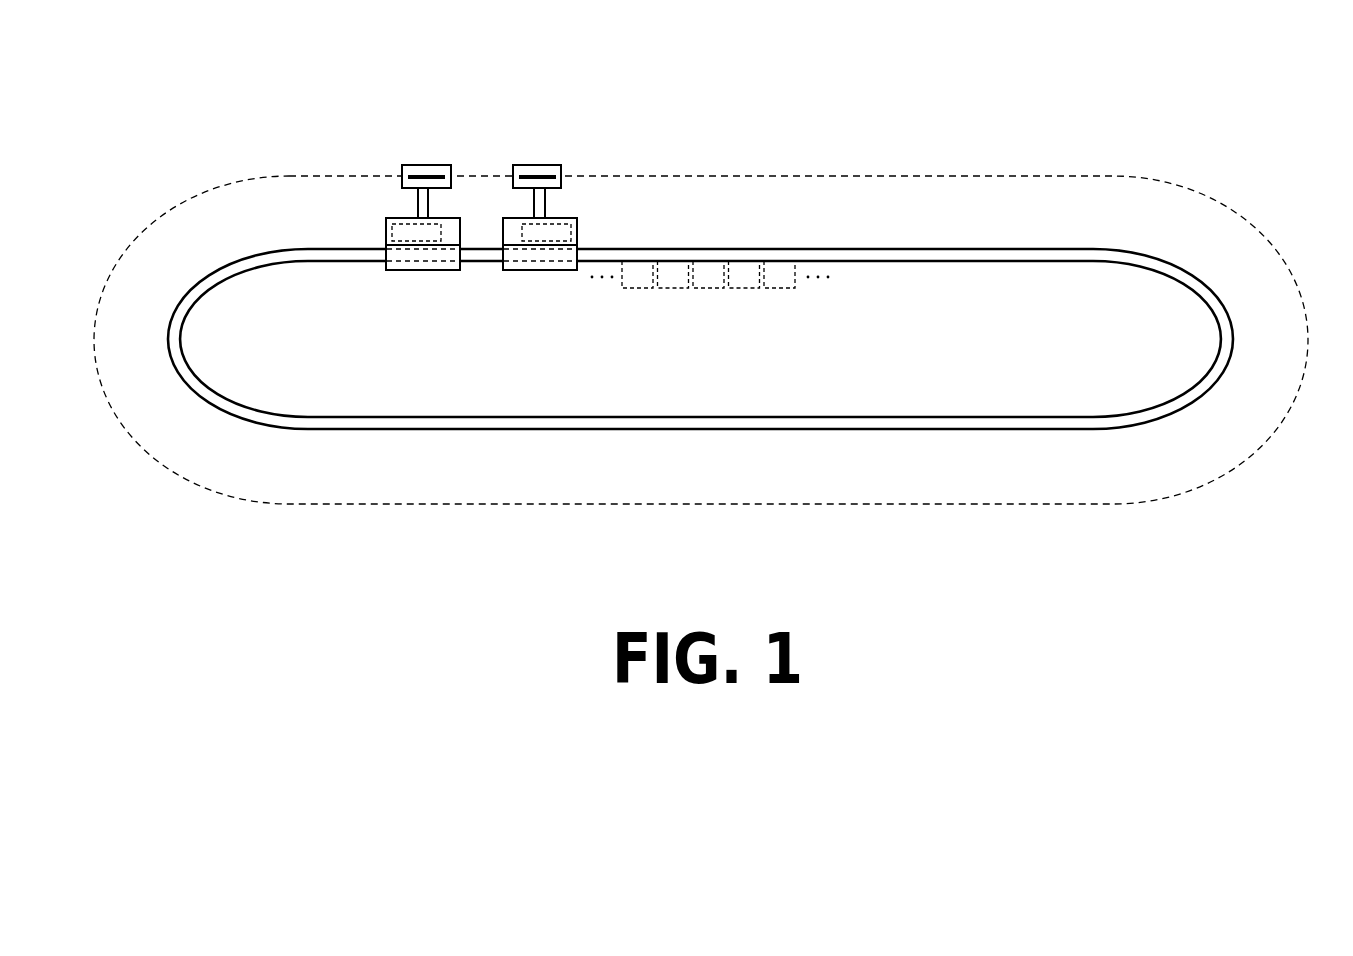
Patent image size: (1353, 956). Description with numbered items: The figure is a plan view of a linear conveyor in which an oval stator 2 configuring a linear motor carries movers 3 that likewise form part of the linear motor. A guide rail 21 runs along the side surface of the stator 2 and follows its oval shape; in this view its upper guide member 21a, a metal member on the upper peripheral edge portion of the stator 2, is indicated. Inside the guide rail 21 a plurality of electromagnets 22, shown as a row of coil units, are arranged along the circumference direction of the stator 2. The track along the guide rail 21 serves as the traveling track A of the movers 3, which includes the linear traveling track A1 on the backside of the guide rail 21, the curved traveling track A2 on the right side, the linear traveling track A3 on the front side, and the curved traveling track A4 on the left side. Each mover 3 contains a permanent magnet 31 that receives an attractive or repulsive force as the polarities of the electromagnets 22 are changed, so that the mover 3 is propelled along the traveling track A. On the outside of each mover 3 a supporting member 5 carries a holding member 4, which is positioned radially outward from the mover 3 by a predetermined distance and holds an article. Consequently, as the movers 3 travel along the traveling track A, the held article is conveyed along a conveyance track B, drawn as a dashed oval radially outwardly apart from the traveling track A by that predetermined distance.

The stator 2 is at (700, 277).
The guide rail 21 is at (700, 277).
The upper guide member 21a is at (980, 247).
The electromagnets 22 is at (746, 258).
The mover 3 is at (376, 230).
The permanent magnet 31 is at (386, 222).
The holding member 4 is at (426, 165).
The supporting member 5 is at (418, 205).
The traveling track A is at (700, 333).
The linear traveling track A1 is at (860, 251).
The curved traveling track A2 is at (1230, 341).
The linear traveling track A3 is at (768, 424).
The curved traveling track A4 is at (170, 341).
The conveyance track B is at (712, 505).